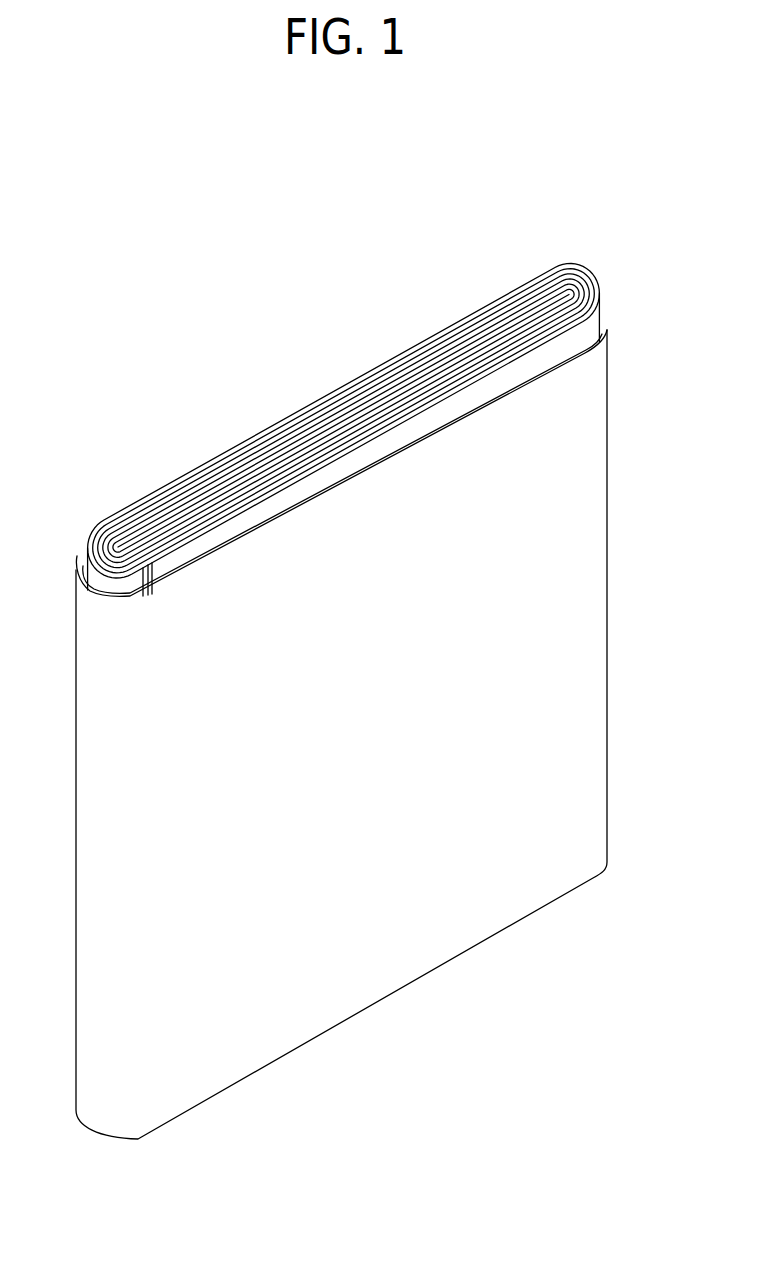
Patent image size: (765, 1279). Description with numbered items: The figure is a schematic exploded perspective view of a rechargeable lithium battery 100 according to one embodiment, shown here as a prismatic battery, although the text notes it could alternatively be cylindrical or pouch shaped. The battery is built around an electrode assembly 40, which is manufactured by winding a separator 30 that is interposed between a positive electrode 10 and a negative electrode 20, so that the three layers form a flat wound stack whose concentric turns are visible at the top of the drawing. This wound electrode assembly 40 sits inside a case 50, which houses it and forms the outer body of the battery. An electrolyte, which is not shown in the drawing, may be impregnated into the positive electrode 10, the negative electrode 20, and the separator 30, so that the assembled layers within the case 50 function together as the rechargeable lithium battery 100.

The rechargeable lithium battery 100 is at (357, 150).
The positive electrode 10 is at (600, 287).
The negative electrode 20 is at (563, 283).
The separator 30 is at (587, 274).
The electrode assembly 40 is at (311, 393).
The case 50 is at (592, 580).